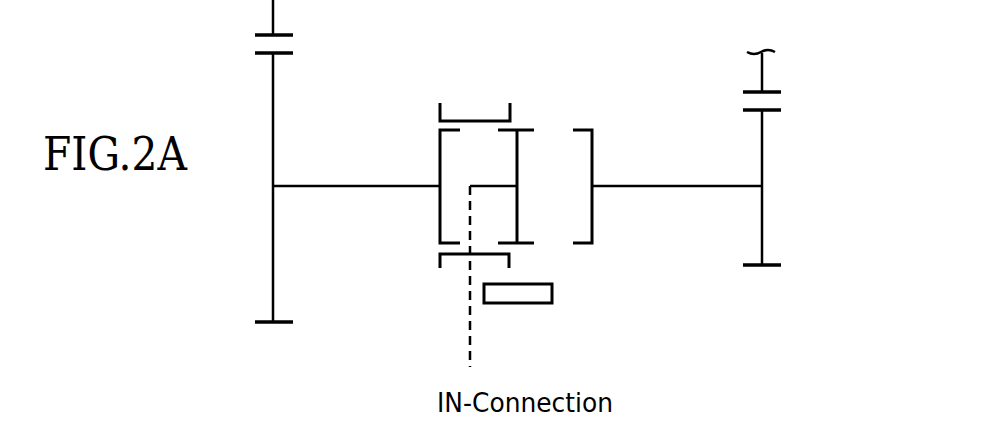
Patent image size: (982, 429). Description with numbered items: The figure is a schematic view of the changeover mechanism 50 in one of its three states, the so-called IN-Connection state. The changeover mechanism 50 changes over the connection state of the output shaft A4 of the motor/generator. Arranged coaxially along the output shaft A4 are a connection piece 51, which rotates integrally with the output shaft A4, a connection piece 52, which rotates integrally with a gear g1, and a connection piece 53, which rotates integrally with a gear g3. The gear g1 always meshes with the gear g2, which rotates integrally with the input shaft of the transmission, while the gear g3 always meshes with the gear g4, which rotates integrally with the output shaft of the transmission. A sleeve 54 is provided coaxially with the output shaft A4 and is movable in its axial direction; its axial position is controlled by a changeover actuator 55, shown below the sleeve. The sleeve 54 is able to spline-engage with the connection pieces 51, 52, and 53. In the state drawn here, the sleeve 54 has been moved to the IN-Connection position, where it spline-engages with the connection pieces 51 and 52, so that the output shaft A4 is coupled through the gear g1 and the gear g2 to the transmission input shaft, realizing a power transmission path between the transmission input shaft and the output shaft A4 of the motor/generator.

The gear g1 is at (274, 264).
The gear g2 is at (274, 13).
The gear g3 is at (763, 223).
The gear g4 is at (763, 72).
The changeover mechanism 50 is at (519, 219).
The connection piece 51 is at (518, 155).
The connection piece 52 is at (438, 220).
The connection piece 53 is at (593, 219).
The sleeve 54 is at (511, 112).
The changeover actuator 55 is at (514, 304).
The output shaft A4 is at (470, 186).